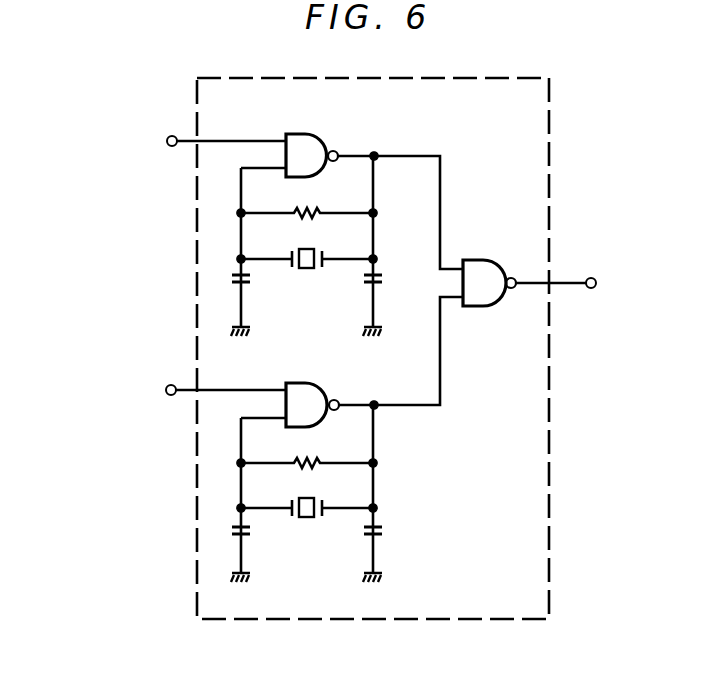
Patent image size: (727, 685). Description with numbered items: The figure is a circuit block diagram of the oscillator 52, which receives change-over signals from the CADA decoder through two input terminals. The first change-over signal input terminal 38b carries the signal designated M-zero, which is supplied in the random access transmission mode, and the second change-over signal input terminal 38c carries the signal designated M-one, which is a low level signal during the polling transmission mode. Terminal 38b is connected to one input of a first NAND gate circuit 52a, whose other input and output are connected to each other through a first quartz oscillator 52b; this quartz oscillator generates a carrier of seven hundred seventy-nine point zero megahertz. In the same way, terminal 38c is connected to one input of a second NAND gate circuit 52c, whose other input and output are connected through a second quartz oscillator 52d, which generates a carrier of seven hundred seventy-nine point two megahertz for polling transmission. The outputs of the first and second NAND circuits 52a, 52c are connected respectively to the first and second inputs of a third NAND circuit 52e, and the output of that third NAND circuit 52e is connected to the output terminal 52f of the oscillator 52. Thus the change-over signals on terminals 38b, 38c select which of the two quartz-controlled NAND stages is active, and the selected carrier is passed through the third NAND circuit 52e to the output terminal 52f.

The oscillator 52 is at (551, 108).
The first NAND gate circuit 52a is at (308, 134).
The first quartz oscillator 52b is at (308, 272).
The second NAND gate circuit 52c is at (308, 383).
The second quartz oscillator 52d is at (308, 521).
The third NAND circuit 52e is at (486, 260).
The output terminal 52f is at (591, 278).
The first change-over signal input terminal 38b is at (166, 141).
The second change-over signal input terminal 38c is at (165, 389).